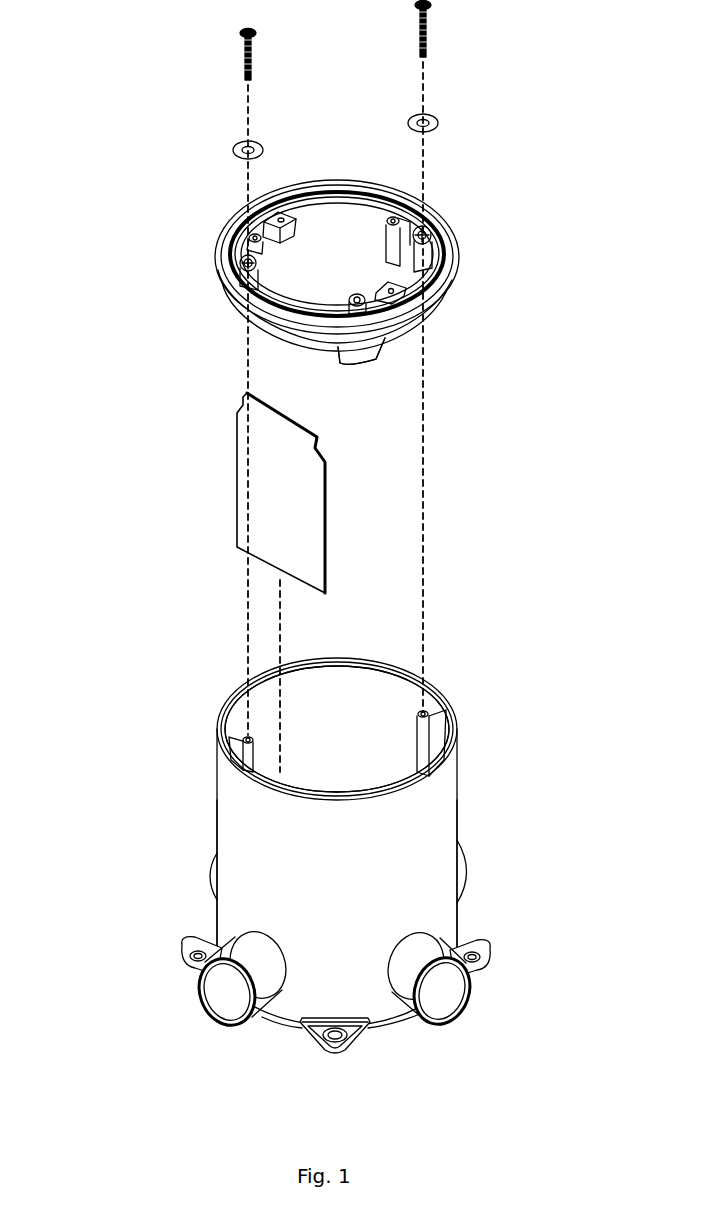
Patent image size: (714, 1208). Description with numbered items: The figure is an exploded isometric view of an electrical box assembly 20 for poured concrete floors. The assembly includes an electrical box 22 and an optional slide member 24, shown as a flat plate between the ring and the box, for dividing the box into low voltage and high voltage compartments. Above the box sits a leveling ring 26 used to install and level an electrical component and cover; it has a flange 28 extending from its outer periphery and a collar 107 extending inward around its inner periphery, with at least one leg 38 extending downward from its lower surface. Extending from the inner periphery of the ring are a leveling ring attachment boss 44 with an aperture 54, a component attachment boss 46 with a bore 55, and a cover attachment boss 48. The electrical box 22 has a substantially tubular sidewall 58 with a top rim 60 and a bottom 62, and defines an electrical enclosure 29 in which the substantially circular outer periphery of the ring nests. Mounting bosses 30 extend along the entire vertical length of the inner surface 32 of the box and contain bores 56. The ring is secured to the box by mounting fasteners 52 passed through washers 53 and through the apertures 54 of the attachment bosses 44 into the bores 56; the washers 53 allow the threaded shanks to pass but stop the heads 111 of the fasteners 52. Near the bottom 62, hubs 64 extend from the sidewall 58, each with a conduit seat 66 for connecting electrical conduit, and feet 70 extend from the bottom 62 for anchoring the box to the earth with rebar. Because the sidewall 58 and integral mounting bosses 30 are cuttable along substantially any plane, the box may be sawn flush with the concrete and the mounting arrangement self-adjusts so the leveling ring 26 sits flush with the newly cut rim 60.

The electrical box assembly 20 is at (84, 378).
The electrical box 22 is at (459, 788).
The slide member 24 is at (292, 506).
The leveling ring 26 is at (445, 293).
The flange 28 is at (452, 250).
The electrical enclosure 29 is at (396, 692).
The mounting bosses 30 is at (431, 722).
The inner surface 32 is at (349, 739).
The leg 38 is at (362, 364).
The leveling ring attachment boss 44 is at (241, 258).
The component attachment boss 46 is at (287, 237).
The cover attachment boss 48 is at (391, 318).
The mounting fasteners 52 is at (430, 33).
The washers 53 is at (438, 123).
The apertures 54 is at (427, 233).
The bore 55 is at (281, 206).
The bores 56 is at (245, 740).
The sidewall 58 is at (345, 896).
The top rim 60 is at (368, 660).
The bottom 62 is at (396, 1026).
The hubs 64 is at (446, 992).
The conduit seat 66 is at (224, 1000).
The feet 70 is at (338, 1053).
The collar 107 is at (540, 76).
The heads 111 is at (243, 33).